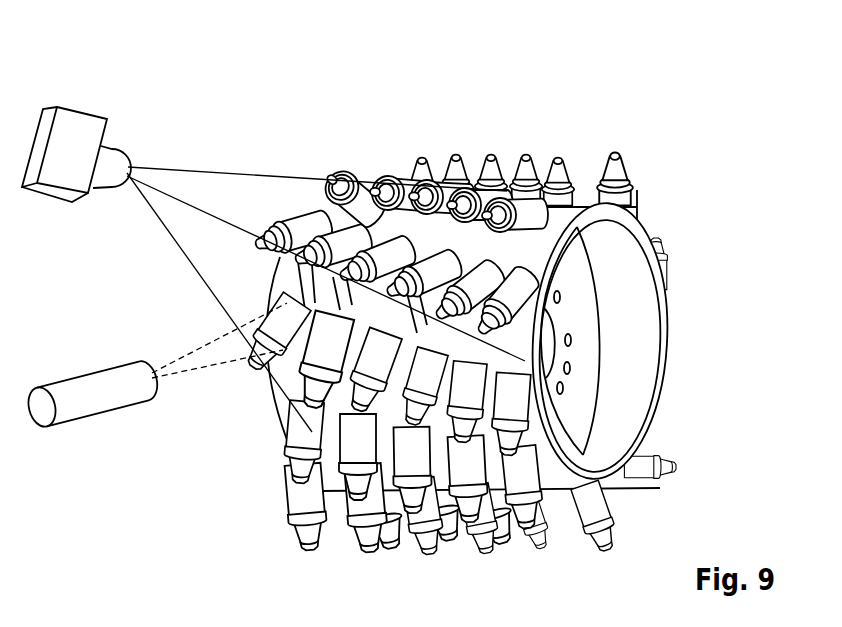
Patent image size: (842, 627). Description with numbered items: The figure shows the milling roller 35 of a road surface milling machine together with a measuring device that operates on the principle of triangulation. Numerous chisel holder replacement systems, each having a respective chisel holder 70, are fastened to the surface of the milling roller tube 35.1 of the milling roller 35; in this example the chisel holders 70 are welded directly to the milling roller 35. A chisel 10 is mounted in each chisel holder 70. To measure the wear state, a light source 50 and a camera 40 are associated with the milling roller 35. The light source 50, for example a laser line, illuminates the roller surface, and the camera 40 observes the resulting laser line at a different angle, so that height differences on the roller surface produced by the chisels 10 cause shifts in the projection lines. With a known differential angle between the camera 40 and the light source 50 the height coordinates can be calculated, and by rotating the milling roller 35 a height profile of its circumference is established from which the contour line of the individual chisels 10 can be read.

The chisel 10 is at (621, 177).
The milling roller 35 is at (722, 291).
The milling roller tube 35.1 is at (645, 358).
The camera 40 is at (78, 110).
The light source 50 is at (97, 382).
The chisel holder 70 is at (630, 211).